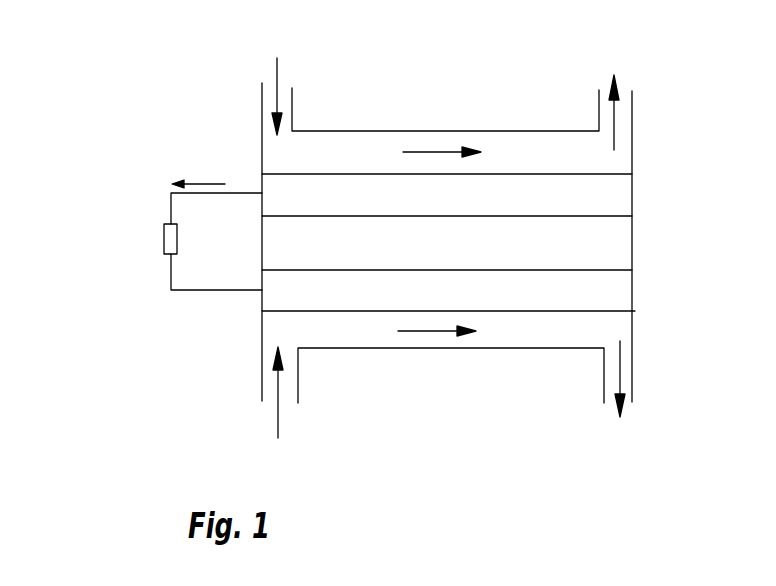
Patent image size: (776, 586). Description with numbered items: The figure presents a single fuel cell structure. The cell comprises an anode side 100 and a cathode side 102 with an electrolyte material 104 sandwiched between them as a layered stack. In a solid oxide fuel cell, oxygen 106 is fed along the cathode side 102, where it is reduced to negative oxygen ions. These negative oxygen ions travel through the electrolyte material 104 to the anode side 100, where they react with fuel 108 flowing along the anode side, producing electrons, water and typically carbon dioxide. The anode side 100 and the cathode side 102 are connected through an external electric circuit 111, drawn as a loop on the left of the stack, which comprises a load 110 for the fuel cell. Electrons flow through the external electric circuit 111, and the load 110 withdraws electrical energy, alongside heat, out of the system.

The anode side 100 is at (608, 192).
The cathode side 102 is at (606, 287).
The electrolyte material 104 is at (612, 240).
The oxygen 106 is at (278, 435).
The fuel 108 is at (277, 70).
The load 110 is at (163, 240).
The external electric circuit 111 is at (155, 183).